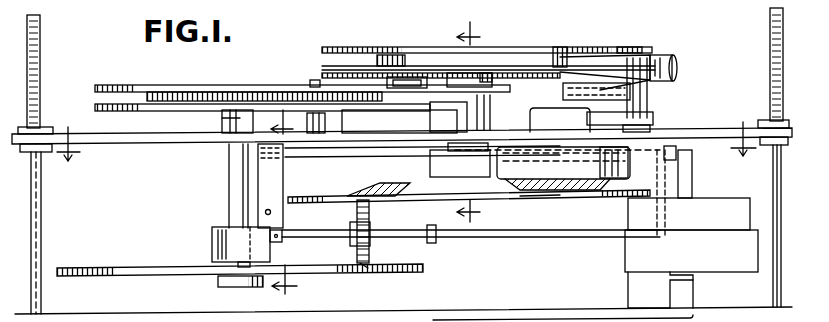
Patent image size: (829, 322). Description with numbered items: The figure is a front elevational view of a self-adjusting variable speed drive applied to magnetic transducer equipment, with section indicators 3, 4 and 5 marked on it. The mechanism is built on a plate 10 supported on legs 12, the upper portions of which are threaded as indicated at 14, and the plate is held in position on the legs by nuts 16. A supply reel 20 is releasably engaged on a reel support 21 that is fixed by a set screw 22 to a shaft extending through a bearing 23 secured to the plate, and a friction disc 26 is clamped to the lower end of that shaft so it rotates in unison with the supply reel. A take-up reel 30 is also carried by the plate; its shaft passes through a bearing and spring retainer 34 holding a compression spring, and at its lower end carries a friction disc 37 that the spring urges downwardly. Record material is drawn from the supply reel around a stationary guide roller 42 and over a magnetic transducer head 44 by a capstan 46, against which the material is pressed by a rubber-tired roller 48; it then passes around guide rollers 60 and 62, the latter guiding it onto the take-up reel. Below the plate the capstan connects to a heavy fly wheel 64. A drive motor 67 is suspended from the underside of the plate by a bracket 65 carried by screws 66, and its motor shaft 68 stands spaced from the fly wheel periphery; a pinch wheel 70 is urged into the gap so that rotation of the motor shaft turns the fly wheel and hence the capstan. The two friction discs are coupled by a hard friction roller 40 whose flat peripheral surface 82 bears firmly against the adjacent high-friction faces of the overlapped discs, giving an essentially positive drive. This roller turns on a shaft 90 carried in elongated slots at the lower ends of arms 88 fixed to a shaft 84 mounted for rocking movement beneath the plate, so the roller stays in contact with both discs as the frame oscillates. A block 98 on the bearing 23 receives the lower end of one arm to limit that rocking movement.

The plate 10 is at (146, 145).
The legs 12 is at (44, 232).
The threaded upper portions of legs 14 is at (39, 80).
The nuts 16 is at (42, 127).
The supply reel 20 is at (172, 85).
The reel support 21 is at (222, 118).
The set screw 22 is at (242, 116).
The bearing 23 is at (228, 163).
The friction disc 26 is at (174, 275).
The take-up reel 30 is at (580, 45).
The bearing and spring retainer 34 is at (544, 119).
The friction disc 37 is at (535, 196).
The friction roller 40 is at (385, 267).
The stationary guide roller 42 is at (305, 88).
The magnetic transducer head 44 is at (400, 77).
The capstan 46 is at (550, 47).
The roller 48 is at (640, 99).
The guide roller 60 is at (674, 60).
The guide roller 62 is at (630, 45).
The fly wheel 64 is at (563, 168).
The bracket 65 is at (668, 300).
The screws 66 is at (628, 166).
The drive motor 67 is at (625, 258).
The motor shaft 68 is at (678, 153).
The pinch wheel 70 is at (692, 172).
The flat peripheral surface 82 is at (358, 206).
The shaft 84 is at (378, 166).
The arms 88 is at (278, 187).
The shaft 90 is at (545, 240).
The block 98 is at (212, 243).
The section line 3 is at (406, 148).
The section line 4 is at (284, 207).
The section line 5 is at (460, 112).